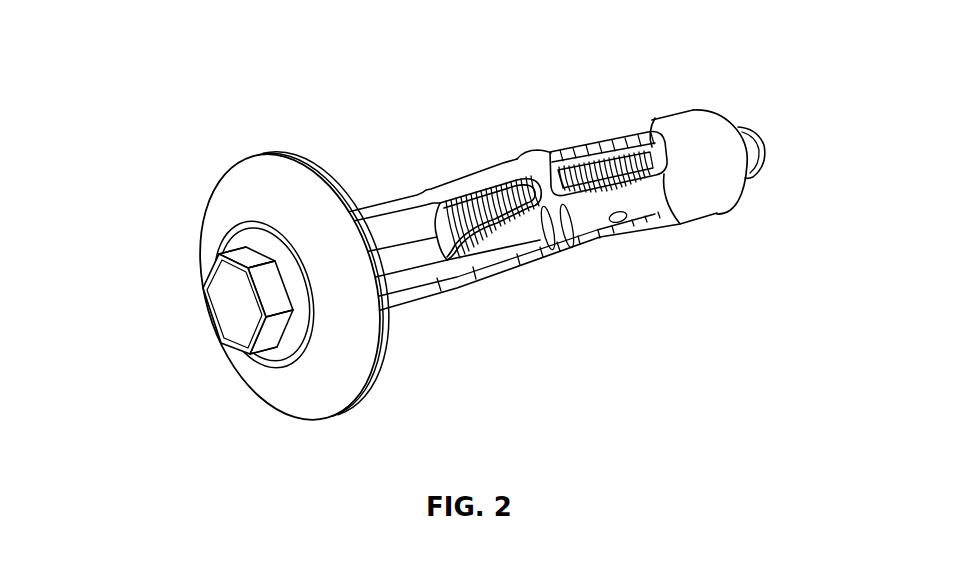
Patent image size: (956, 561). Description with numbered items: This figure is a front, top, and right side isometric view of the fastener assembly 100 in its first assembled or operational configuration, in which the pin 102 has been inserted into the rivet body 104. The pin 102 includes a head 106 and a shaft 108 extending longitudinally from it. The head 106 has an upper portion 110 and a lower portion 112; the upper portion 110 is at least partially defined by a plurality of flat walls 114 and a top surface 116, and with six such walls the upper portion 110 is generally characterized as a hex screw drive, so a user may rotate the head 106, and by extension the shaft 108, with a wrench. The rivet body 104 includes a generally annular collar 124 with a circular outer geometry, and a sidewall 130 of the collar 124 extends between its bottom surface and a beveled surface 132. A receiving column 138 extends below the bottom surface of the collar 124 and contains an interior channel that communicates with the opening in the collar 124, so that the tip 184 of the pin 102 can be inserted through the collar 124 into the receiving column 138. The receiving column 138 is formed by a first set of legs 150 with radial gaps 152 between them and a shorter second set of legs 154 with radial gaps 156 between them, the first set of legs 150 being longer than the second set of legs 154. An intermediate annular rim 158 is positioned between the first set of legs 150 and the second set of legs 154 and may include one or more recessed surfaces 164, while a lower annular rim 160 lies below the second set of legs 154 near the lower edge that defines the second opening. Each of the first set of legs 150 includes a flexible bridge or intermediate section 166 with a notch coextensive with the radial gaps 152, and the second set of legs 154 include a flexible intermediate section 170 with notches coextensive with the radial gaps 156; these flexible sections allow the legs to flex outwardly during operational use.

The fastener assembly 100 is at (451, 270).
The pin 102 is at (216, 338).
The rivet body 104 is at (560, 158).
The head 106 is at (208, 297).
The shaft 108 is at (747, 130).
The upper portion 110 is at (230, 257).
The lower portion 112 is at (344, 340).
The flat walls 114 is at (272, 334).
The top surface 116 is at (210, 292).
The collar 124 is at (244, 184).
The sidewall 130 is at (346, 208).
The beveled surface 132 is at (295, 205).
The receiving column 138 is at (703, 203).
The first set of legs 150 is at (453, 188).
The radial gaps 152 is at (393, 252).
The second set of legs 154 is at (617, 147).
The radial gaps 156 is at (597, 193).
The intermediate annular rim 158 is at (553, 258).
The lower annular rim 160 is at (691, 120).
The recessed surfaces 164 is at (512, 162).
The flexible intermediate section 166 is at (453, 270).
The flexible intermediate section 170 is at (644, 218).
The tip 184 is at (764, 166).